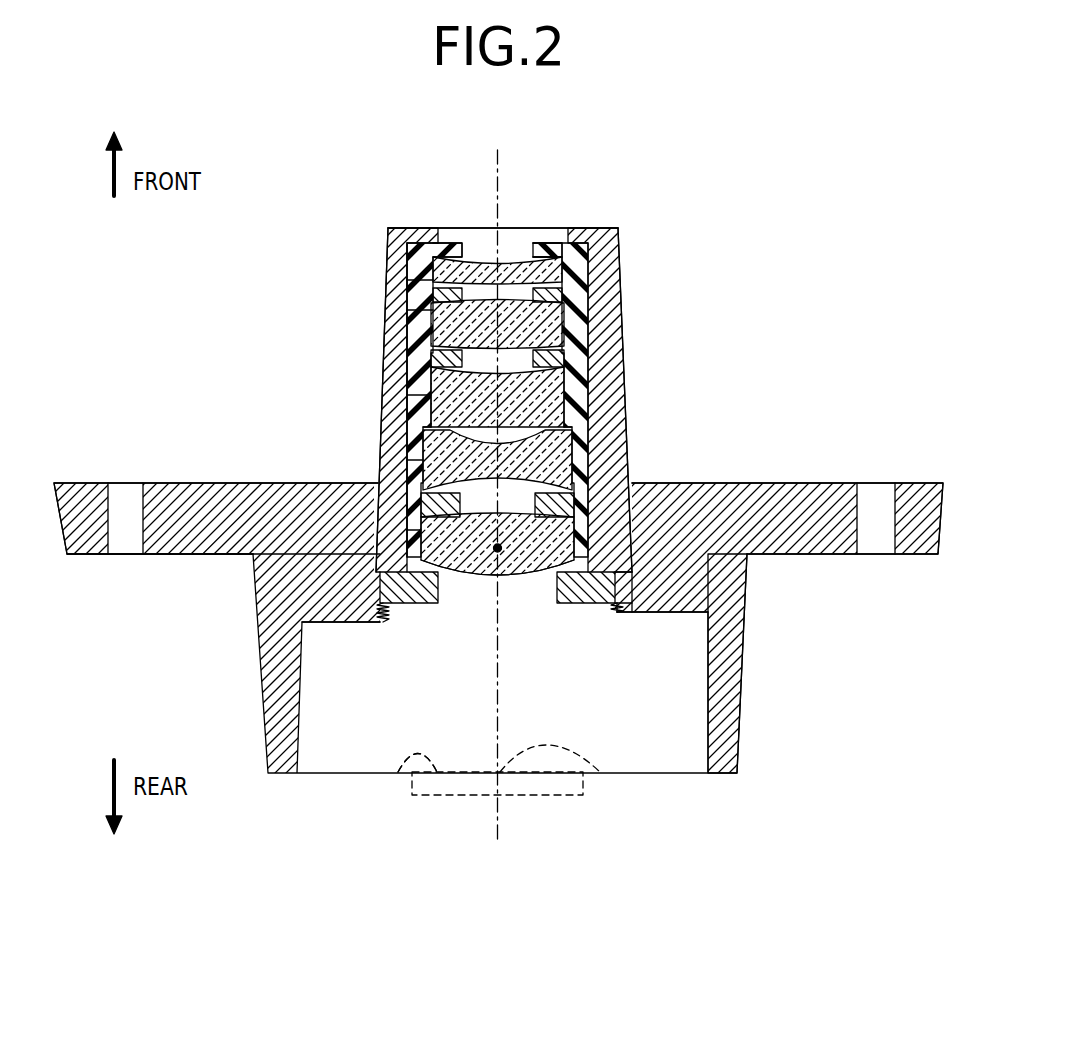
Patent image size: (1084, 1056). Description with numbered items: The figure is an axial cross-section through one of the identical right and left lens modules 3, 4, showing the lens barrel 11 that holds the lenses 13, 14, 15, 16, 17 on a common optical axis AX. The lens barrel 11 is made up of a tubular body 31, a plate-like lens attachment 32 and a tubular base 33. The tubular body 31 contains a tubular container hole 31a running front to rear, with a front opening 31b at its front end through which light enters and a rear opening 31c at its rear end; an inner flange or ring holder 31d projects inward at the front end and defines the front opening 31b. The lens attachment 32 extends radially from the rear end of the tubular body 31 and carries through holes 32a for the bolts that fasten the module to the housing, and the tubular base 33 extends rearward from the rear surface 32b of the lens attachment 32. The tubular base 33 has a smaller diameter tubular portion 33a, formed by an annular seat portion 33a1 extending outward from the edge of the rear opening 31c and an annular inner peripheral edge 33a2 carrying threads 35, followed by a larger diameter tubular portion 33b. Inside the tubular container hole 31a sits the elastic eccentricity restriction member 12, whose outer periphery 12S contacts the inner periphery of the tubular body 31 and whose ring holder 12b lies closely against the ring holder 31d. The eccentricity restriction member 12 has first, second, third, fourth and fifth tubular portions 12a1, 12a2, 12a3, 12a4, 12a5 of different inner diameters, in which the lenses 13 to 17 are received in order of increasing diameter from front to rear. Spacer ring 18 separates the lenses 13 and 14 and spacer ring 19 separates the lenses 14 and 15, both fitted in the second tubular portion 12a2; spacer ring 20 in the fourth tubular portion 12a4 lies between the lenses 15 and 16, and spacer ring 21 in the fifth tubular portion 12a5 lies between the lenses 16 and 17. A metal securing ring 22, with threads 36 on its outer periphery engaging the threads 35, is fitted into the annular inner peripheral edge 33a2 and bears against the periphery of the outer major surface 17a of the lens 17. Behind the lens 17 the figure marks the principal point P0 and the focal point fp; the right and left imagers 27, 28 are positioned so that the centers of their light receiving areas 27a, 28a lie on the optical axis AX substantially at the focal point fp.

The right lens module 3 is at (555, 165).
The left lens module 4 is at (650, 190).
The lens barrel 11 is at (632, 304).
The eccentricity restriction member 12 is at (420, 405).
The first tubular portion 12a1 is at (425, 288).
The second tubular portion 12a2 is at (432, 306).
The third tubular portion 12a3 is at (425, 395).
The fourth tubular portion 12a4 is at (425, 460).
The fifth tubular portion 12a5 is at (408, 530).
The ring holder 12b is at (446, 243).
The outer periphery 12S is at (620, 330).
The lens 13 is at (445, 272).
The lens 14 is at (440, 296).
The lens 15 is at (445, 357).
The lens 16 is at (440, 430).
The lens 17 is at (430, 520).
The outer major surface 17a is at (497, 553).
The spacer ring 18 is at (595, 262).
The spacer ring 19 is at (585, 322).
The spacer ring 20 is at (572, 445).
The spacer ring 21 is at (585, 500).
The securing ring 22 is at (378, 582).
The right imager 27 is at (566, 818).
The left imager 28 is at (600, 772).
The right receiving area 27a is at (363, 837).
The left receiving area 28a is at (403, 755).
The tubular body 31 is at (608, 388).
The tubular container hole 31a is at (480, 356).
The front opening 31b is at (506, 222).
The rear opening 31c is at (527, 584).
The ring holder 31d is at (417, 228).
The lens attachment 32 is at (222, 493).
The through holes 32a is at (140, 483).
The rear surface 32b is at (163, 555).
The tubular base 33 is at (833, 580).
The smaller diameter tubular portion 33a is at (698, 585).
The annular seat portion 33a1 is at (633, 560).
The annular inner peripheral edge 33a2 is at (620, 572).
The larger diameter tubular portion 33b is at (723, 690).
The threads 35 is at (622, 612).
The threads 36 is at (613, 610).
The optical axis AX is at (493, 157).
The principal point P0 is at (472, 578).
The focal point fp is at (585, 792).